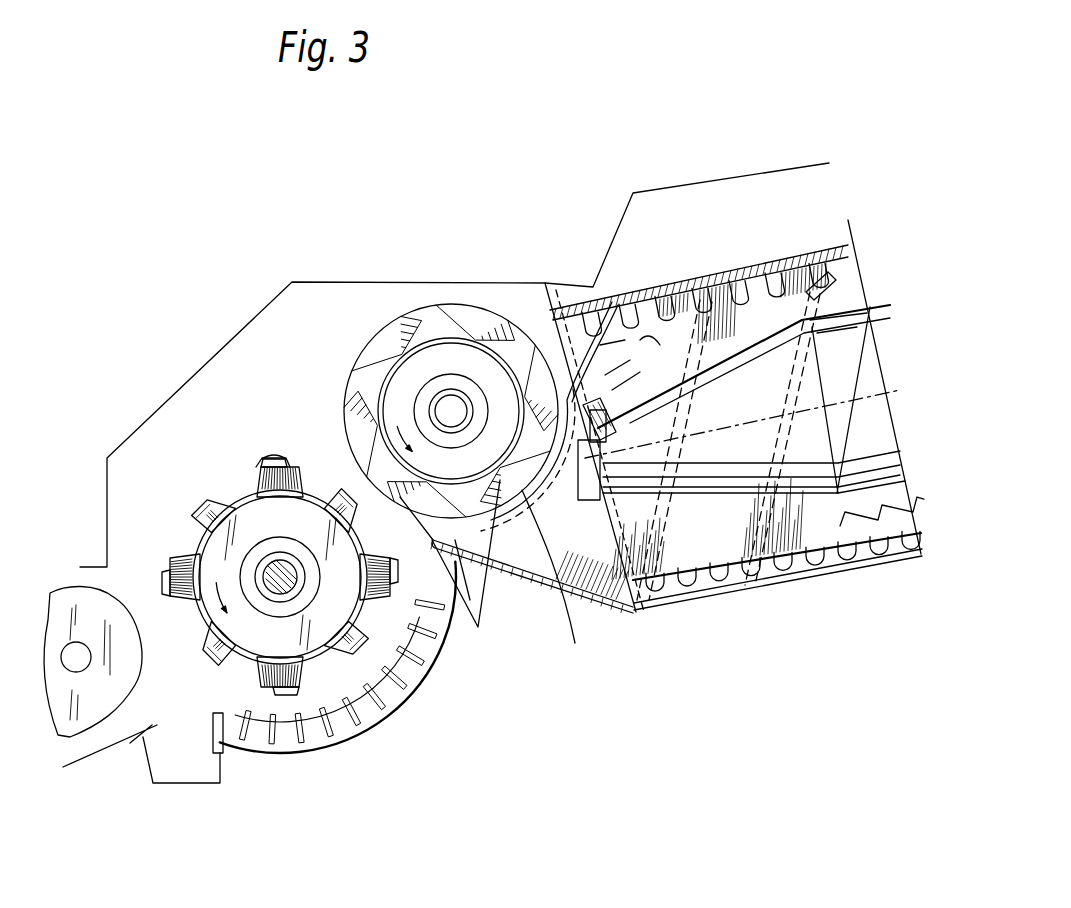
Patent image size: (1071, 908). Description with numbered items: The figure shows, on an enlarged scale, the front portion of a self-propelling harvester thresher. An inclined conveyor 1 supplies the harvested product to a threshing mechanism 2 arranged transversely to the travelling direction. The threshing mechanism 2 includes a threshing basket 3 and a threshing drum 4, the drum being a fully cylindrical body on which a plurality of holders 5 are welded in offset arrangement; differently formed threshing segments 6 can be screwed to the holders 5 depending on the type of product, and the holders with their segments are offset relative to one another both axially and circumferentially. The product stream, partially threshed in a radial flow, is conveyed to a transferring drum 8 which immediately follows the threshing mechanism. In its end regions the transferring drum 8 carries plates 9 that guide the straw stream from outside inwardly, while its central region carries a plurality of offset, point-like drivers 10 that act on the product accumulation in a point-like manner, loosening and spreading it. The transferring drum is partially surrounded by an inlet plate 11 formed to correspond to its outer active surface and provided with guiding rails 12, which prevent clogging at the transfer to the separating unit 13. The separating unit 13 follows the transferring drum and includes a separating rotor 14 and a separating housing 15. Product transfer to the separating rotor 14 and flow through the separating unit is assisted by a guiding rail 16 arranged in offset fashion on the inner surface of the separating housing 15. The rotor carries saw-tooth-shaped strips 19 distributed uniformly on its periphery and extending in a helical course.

The inclined conveyor 1 is at (103, 705).
The threshing mechanism 2 is at (212, 478).
The threshing basket 3 is at (258, 742).
The threshing drum 4 is at (316, 636).
The holders 5 is at (264, 460).
The threshing segments 6 is at (279, 456).
The transferring drum 8 is at (403, 380).
The plates 9 is at (466, 318).
The drivers 10 is at (450, 578).
The inlet plate 11 is at (552, 589).
The guiding rails 12 is at (532, 556).
The separating unit 13 is at (853, 568).
The separating rotor 14 is at (860, 343).
The separating housing 15 is at (683, 300).
The guiding rail 16 is at (552, 345).
The saw-tooth-shaped strips 19 is at (808, 515).